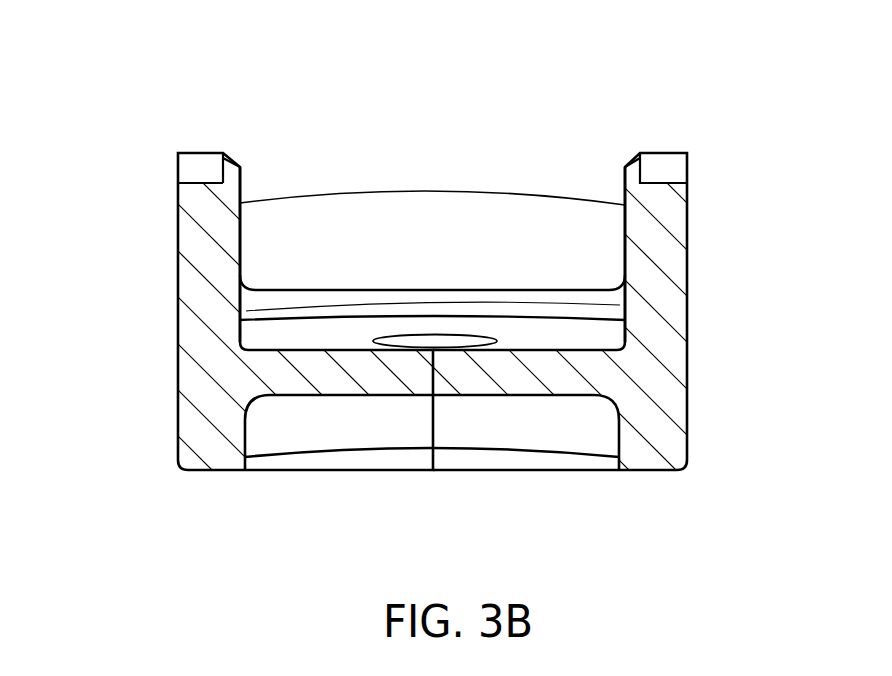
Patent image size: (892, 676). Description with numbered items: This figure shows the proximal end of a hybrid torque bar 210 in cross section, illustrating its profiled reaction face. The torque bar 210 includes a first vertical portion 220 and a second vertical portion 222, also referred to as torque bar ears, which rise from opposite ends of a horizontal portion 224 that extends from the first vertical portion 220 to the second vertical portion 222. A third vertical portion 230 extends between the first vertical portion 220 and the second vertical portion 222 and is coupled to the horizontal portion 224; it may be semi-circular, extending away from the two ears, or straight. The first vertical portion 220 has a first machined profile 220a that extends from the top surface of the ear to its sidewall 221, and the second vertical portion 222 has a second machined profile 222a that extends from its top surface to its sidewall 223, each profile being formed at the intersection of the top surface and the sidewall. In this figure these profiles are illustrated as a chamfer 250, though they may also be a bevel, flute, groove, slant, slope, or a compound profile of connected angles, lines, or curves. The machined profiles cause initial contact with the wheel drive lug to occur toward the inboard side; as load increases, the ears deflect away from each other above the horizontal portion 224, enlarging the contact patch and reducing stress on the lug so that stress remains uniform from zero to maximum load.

The torque bar 210 is at (446, 286).
The first vertical portion 220 is at (254, 276).
The first machined profile 220a is at (233, 163).
The sidewall 221 is at (240, 207).
The second vertical portion 222 is at (614, 276).
The second machined profile 222a is at (633, 162).
The sidewall 223 is at (627, 227).
The horizontal portion 224 is at (372, 383).
The third vertical portion 230 is at (547, 205).
The chamfer 250 is at (235, 190).